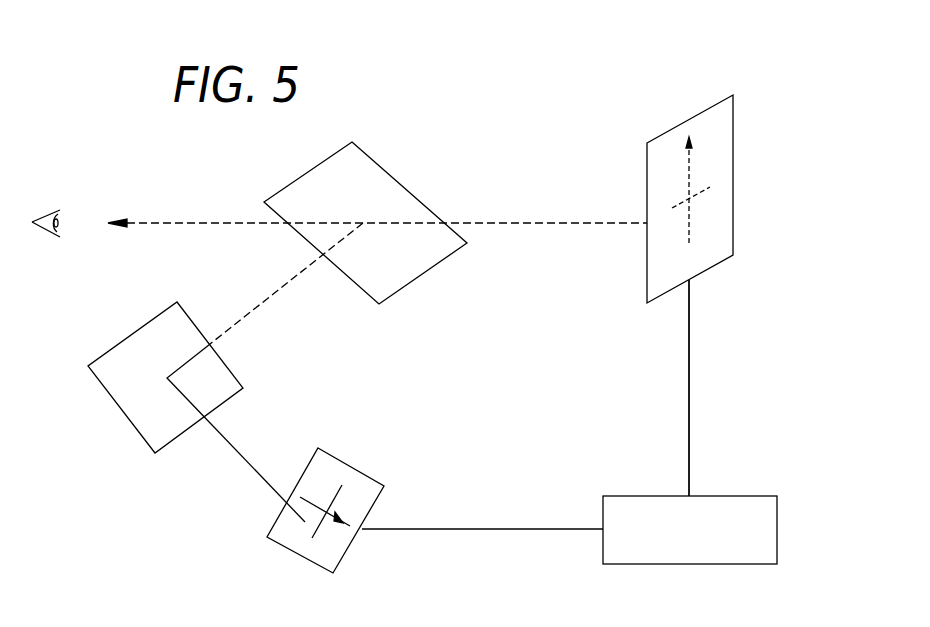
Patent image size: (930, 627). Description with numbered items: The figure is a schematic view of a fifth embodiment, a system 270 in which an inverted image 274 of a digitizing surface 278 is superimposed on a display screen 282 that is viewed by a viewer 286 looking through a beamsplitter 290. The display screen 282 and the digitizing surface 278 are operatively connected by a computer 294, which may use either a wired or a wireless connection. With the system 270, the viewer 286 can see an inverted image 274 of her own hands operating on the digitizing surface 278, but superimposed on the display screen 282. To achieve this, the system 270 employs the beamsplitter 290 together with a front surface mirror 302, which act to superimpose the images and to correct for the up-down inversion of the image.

The system 270 is at (430, 131).
The inverted image 274 is at (690, 223).
The digitizing surface 278 is at (352, 463).
The display screen 282 is at (712, 272).
The viewer 286 is at (47, 212).
The beamsplitter 290 is at (423, 277).
The computer 294 is at (657, 495).
The front surface mirror 302 is at (120, 410).